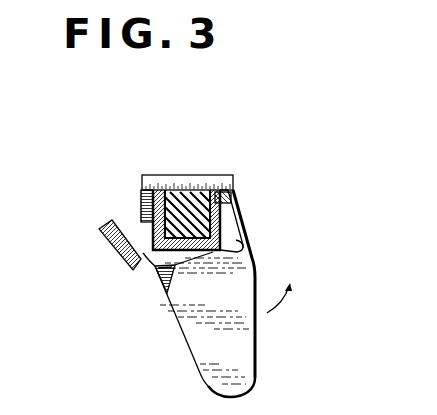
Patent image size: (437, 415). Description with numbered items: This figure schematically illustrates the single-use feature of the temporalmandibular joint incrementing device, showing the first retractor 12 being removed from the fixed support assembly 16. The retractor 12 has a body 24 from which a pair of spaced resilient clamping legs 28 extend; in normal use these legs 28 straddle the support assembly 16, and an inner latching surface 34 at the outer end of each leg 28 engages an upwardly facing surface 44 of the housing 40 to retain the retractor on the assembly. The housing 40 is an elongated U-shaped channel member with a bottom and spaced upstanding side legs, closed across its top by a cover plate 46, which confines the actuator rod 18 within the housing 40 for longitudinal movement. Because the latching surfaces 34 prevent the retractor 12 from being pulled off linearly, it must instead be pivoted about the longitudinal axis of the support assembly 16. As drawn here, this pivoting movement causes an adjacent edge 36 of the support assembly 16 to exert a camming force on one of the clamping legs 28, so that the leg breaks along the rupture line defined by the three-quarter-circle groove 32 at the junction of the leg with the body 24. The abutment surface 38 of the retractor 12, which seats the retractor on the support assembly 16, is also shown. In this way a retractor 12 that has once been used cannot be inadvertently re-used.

The first retractor 12 is at (276, 380).
The support assembly 16 is at (128, 145).
The actuator rod 18 is at (200, 185).
The body 24 is at (247, 350).
The resilient clamping legs 28 is at (103, 235).
The groove 32 is at (155, 266).
The latching surface 34 is at (237, 198).
The edge 36 is at (152, 253).
The abutment surface 38 is at (163, 273).
The housing 40 is at (235, 237).
The upwardly facing surfaces 44 is at (141, 188).
The cover plate 46 is at (177, 177).